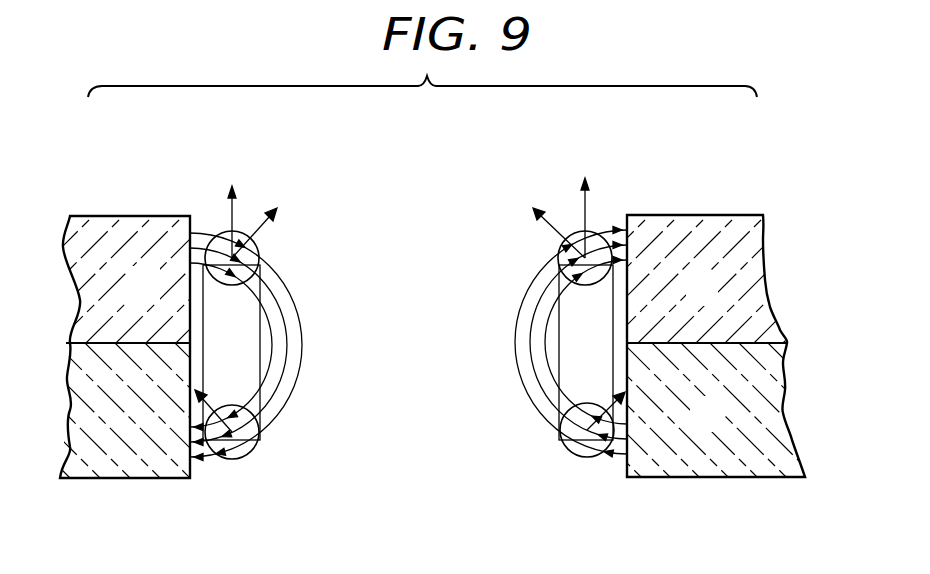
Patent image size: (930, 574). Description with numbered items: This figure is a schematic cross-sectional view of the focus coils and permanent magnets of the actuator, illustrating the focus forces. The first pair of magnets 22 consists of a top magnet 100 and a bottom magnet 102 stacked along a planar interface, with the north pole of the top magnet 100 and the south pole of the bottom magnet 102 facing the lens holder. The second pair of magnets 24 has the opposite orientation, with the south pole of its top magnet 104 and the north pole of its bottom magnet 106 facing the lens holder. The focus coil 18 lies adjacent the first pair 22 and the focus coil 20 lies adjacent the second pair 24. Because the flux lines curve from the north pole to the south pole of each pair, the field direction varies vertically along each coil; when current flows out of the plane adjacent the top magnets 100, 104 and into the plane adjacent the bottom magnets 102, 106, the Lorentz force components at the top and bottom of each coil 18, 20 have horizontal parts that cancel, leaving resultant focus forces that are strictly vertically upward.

The first pair of magnets 22 is at (155, 326).
The top magnet 100 is at (163, 215).
The bottom magnet 102 is at (123, 468).
The focus coil 18 is at (240, 348).
The focus coil 20 is at (568, 343).
The second pair of magnets 24 is at (718, 333).
The top magnet 104 is at (737, 246).
The bottom magnet 106 is at (725, 468).